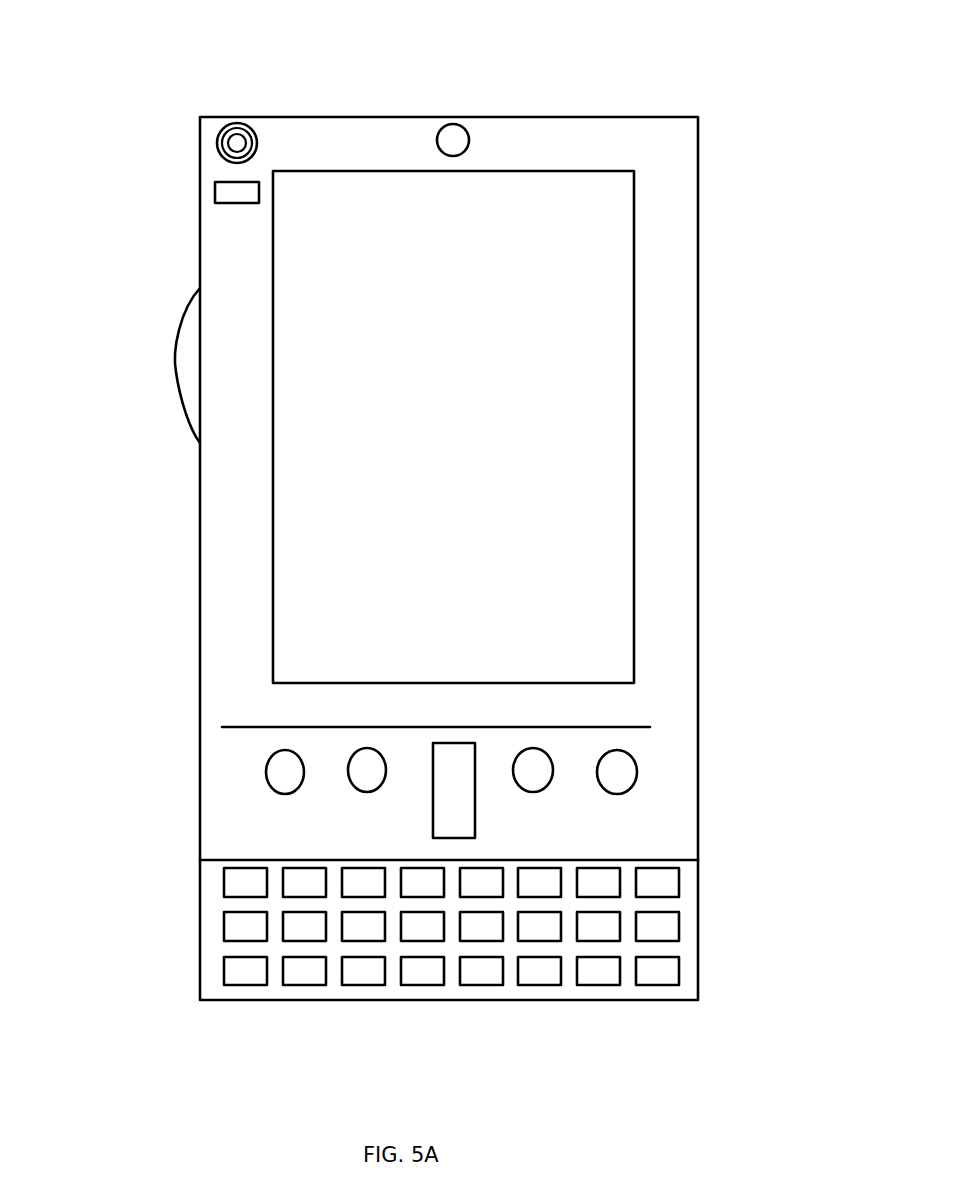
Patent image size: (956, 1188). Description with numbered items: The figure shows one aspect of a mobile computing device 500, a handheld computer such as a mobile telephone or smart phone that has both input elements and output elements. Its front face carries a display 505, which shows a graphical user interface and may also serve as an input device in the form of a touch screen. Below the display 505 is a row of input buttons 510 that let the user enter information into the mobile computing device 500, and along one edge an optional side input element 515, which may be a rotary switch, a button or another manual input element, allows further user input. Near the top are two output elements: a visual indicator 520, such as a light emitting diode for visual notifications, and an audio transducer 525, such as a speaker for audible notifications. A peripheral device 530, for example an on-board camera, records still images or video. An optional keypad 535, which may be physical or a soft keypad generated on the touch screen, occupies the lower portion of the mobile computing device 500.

The mobile computing device 500 is at (687, 135).
The display 505 is at (385, 595).
The input buttons 510 is at (451, 796).
The side input element 515 is at (192, 365).
The visual indicator 520 is at (212, 198).
The audio transducer 525 is at (212, 147).
The peripheral device 530 is at (465, 138).
The keypad 535 is at (210, 975).